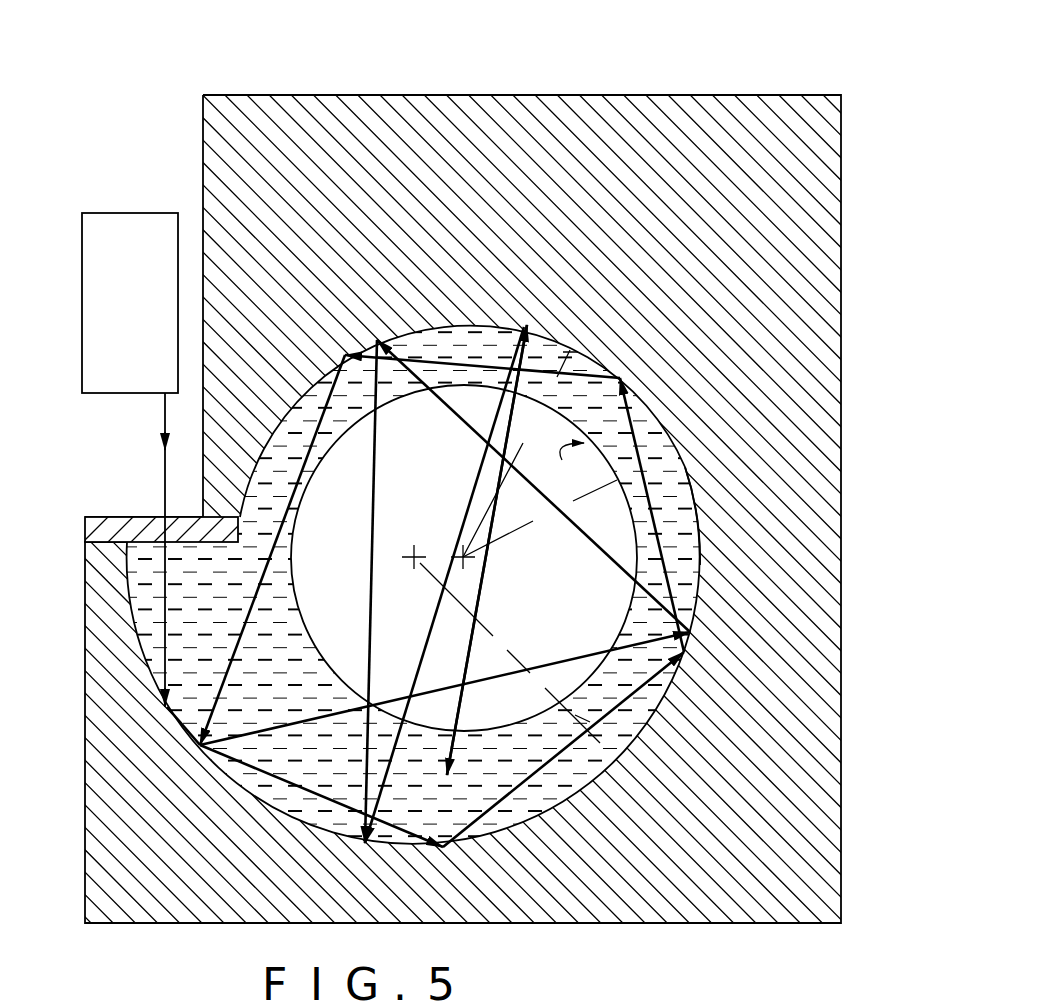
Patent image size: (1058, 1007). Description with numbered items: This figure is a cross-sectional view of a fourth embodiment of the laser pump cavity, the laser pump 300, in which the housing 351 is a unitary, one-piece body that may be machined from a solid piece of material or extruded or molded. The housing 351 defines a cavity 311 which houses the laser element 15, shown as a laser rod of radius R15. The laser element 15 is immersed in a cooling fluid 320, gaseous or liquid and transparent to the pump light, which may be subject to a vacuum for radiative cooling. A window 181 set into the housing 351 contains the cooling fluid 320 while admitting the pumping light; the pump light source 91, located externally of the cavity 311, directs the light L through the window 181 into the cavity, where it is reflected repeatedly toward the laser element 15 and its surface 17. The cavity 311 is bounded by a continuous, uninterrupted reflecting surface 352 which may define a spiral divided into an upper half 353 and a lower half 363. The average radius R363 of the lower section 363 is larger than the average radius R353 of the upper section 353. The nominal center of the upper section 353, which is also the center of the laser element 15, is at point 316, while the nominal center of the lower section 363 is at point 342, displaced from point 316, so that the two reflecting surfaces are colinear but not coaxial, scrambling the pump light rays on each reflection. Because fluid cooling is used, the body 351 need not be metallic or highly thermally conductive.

The laser pump 300 is at (740, 64).
The one-piece housing 351 is at (731, 251).
The window 181 is at (118, 500).
The cooling fluid 320 is at (320, 684).
The upper half of reflecting surface 353 is at (671, 446).
The lower half of reflecting surface 363 is at (562, 808).
The reflecting surface 352 is at (700, 500).
The laser element 15 is at (572, 608).
The nominal center of section 353 316 is at (455, 547).
The nominal center of section 363 342 is at (408, 565).
The average radius of section 353 R353 is at (548, 421).
The radius of laser element R15 is at (590, 506).
The average radius of section 363 R363 is at (563, 686).
The target surface 17 is at (565, 464).
The pump light source 91 is at (142, 302).
The light L is at (160, 432).
The cavity 311 is at (280, 790).